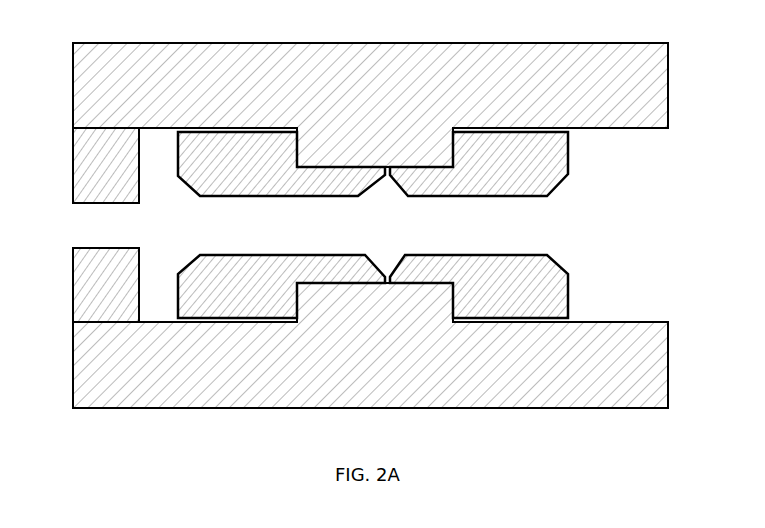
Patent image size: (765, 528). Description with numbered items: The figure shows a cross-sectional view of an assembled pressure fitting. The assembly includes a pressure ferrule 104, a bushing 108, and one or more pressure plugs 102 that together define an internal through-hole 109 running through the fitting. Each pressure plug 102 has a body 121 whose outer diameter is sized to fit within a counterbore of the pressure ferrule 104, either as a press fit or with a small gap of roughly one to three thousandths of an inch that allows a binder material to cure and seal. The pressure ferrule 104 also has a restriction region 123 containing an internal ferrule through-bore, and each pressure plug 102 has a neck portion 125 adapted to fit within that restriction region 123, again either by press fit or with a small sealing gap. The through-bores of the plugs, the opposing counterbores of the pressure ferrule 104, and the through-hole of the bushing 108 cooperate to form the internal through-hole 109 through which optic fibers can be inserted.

The pressure ferrule 104 is at (477, 56).
The bushing 108 is at (84, 159).
The body 121 is at (261, 178).
The restriction region 123 is at (386, 156).
The pressure plug 102 is at (291, 268).
The neck portion 125 is at (342, 265).
The internal through-hole 109 is at (398, 240).